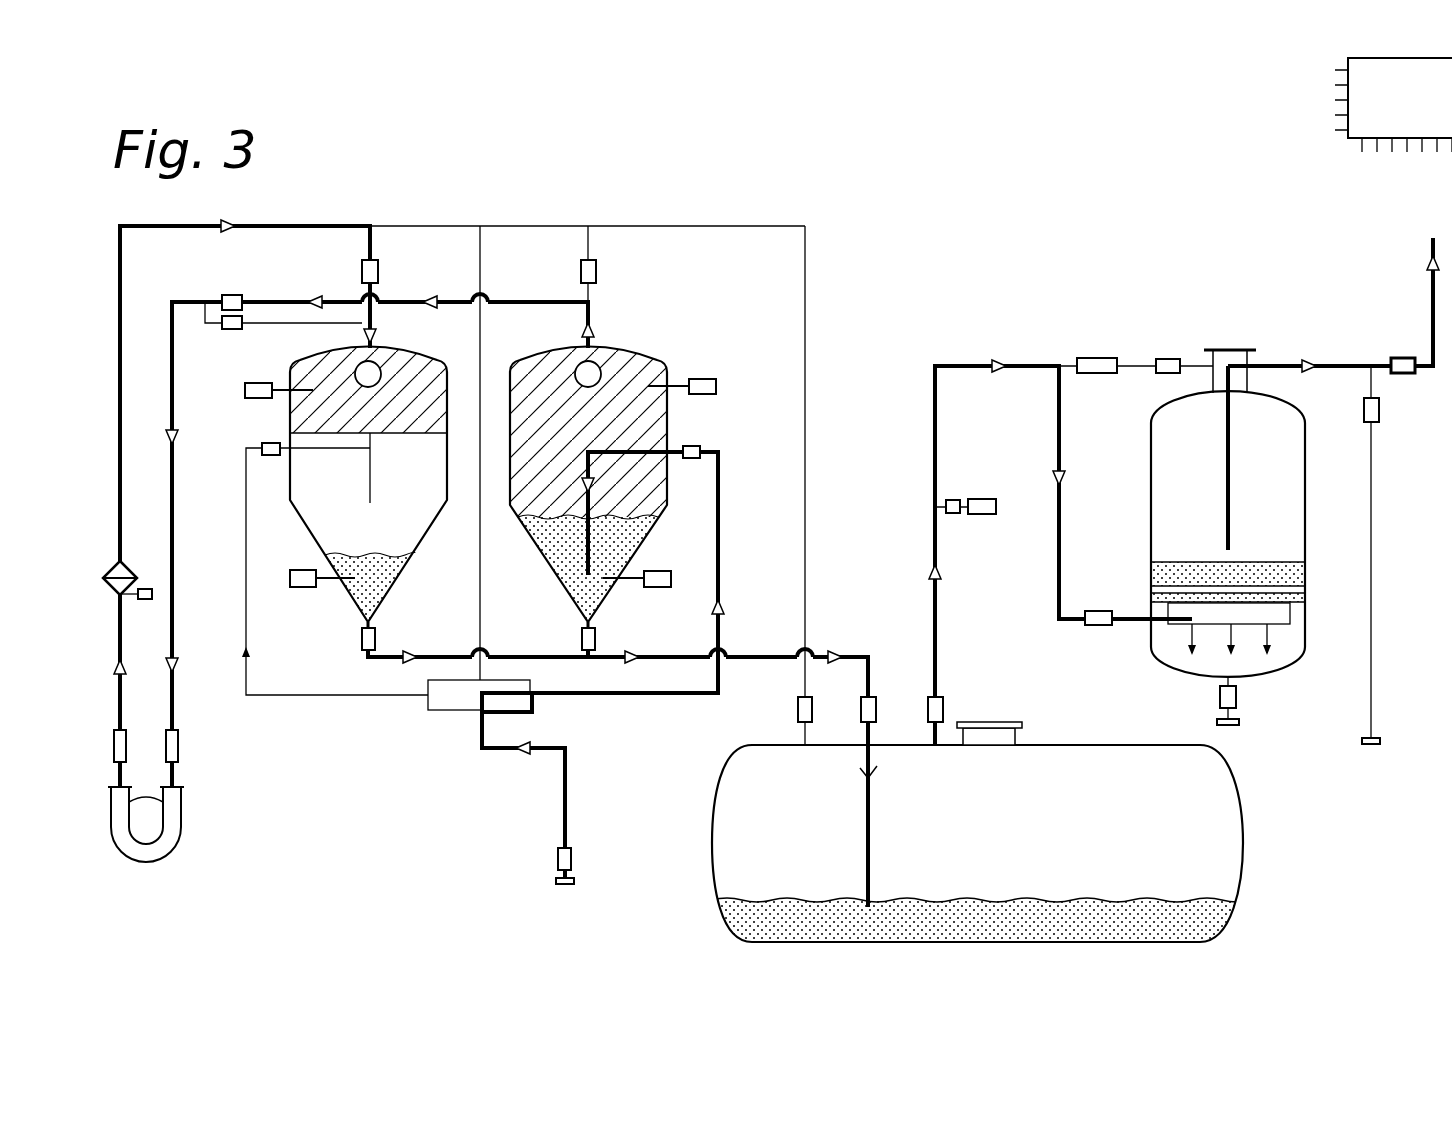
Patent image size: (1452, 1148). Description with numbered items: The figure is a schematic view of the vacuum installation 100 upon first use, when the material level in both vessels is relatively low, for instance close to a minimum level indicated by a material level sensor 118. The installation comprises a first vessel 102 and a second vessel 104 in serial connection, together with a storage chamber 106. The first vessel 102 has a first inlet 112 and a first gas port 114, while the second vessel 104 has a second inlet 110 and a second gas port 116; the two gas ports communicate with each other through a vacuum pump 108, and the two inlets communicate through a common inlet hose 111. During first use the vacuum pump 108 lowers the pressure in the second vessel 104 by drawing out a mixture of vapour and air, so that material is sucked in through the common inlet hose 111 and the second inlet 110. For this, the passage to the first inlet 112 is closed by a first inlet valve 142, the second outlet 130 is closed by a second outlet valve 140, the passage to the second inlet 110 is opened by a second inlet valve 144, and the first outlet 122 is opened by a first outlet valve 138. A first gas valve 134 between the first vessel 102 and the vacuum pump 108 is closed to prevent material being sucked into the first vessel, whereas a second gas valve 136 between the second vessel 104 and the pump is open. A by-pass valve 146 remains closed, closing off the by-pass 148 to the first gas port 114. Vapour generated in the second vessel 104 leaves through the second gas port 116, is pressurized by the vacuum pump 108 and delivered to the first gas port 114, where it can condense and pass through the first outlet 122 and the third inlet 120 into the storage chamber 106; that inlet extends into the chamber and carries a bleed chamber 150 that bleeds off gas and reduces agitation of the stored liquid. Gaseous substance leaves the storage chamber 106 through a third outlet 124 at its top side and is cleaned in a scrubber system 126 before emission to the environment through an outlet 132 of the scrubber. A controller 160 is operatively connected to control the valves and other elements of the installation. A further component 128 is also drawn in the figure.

The vacuum installation 100 is at (840, 190).
The first vessel 102 is at (412, 523).
The second vessel 104 is at (659, 358).
The storage chamber 106 is at (1200, 802).
The vacuum pump 108 is at (155, 825).
The second inlet 110 is at (682, 443).
The common inlet hose 111 is at (565, 822).
The first inlet 112 is at (292, 475).
The first gas port 114 is at (372, 348).
The second gas port 116 is at (590, 338).
The material level sensor 118 is at (296, 587).
The third inlet 120 is at (870, 738).
The first outlet 122 is at (378, 628).
The third outlet 124 is at (935, 742).
The scrubber system 126 is at (1268, 645).
The sensor 128 is at (244, 394).
The second outlet 130 is at (592, 626).
The outlet of the scrubber 132 is at (1242, 383).
The first gas valve 134 is at (380, 272).
The second gas valve 136 is at (596, 272).
The first outlet valve 138 is at (363, 642).
The second outlet valve 140 is at (582, 638).
The first inlet valve 142 is at (265, 458).
The second inlet valve 144 is at (692, 458).
The by-pass valve 146 is at (230, 329).
The by-pass 148 is at (280, 323).
The bleed chamber 150 is at (868, 773).
The controller 160 is at (1437, 111).